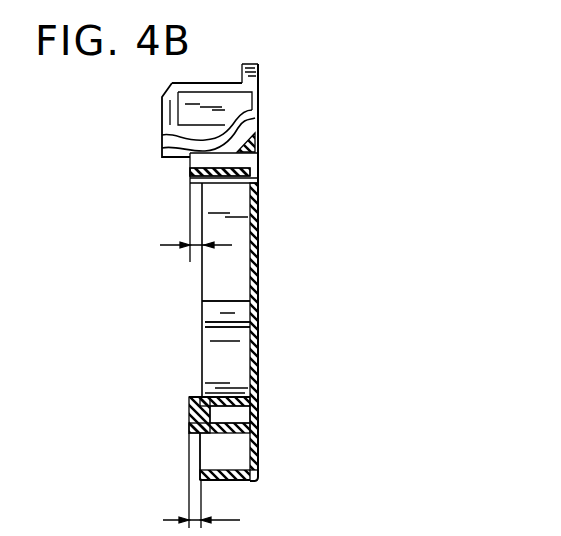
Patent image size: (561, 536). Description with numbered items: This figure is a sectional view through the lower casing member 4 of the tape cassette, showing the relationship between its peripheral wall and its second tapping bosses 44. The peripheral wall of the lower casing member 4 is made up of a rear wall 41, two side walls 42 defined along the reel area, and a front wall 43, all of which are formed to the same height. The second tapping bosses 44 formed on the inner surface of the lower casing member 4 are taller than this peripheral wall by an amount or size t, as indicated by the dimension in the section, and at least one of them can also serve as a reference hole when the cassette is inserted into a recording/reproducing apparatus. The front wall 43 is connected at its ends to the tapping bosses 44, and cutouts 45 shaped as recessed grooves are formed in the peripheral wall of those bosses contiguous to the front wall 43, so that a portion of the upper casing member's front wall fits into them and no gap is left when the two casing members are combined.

The lower casing member 4 is at (270, 258).
The rear wall 41 is at (243, 482).
The side walls 42 is at (202, 343).
The front wall 43 is at (246, 167).
The second tapping bosses 44 is at (190, 159).
The cutouts 45 is at (202, 168).